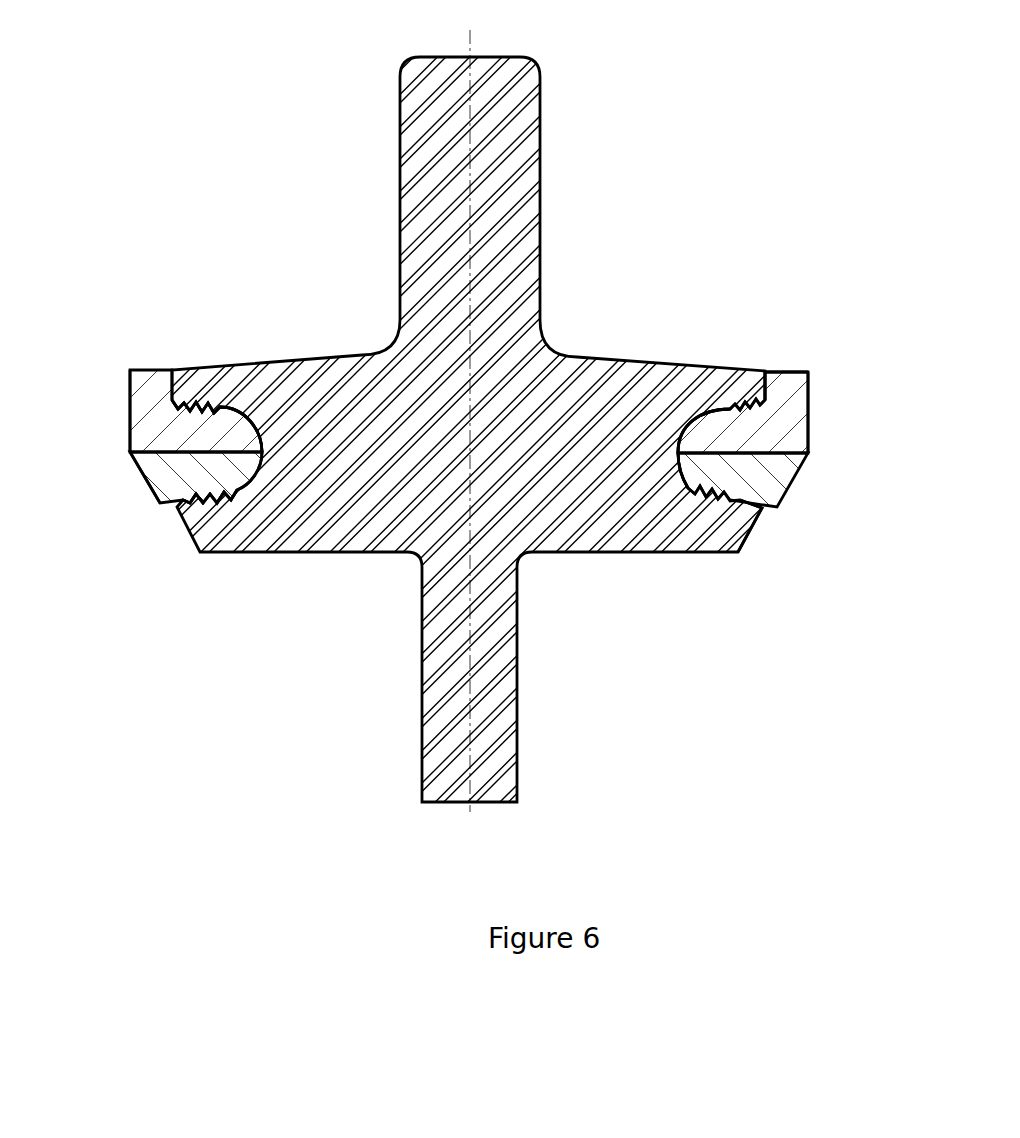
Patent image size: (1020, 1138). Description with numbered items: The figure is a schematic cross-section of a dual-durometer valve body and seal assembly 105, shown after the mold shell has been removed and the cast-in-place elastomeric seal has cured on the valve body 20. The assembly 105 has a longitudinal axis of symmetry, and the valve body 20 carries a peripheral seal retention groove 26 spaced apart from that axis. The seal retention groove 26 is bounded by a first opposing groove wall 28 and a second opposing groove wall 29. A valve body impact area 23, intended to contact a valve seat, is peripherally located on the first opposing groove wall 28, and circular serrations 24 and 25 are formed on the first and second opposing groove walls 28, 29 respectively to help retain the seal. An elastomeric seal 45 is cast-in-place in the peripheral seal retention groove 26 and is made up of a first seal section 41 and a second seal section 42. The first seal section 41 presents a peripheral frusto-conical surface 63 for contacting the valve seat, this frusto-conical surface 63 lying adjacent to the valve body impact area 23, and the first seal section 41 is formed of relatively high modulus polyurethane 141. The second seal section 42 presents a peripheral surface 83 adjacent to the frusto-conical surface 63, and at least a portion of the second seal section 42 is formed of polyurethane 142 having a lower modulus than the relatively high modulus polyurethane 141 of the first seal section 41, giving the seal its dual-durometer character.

The valve body and seal assembly 105 is at (299, 190).
The valve body 20 is at (388, 424).
The elastomeric seal 45 is at (149, 420).
The polyurethane 142 is at (162, 436).
The relatively high modulus polyurethane 141 is at (167, 486).
The peripheral surface 83 is at (128, 418).
The peripheral frusto-conical surface 63 is at (145, 487).
The second opposing groove wall 29 is at (225, 407).
The first opposing groove wall 28 is at (182, 497).
The peripheral seal retention groove 26 is at (704, 428).
The circular serrations 25 is at (737, 405).
The circular serrations 24 is at (720, 490).
The second seal section 42 is at (788, 372).
The first seal section 41 is at (810, 462).
The valve body impact area 23 is at (752, 537).